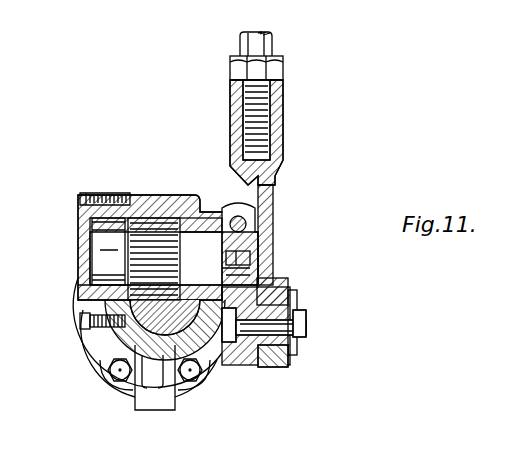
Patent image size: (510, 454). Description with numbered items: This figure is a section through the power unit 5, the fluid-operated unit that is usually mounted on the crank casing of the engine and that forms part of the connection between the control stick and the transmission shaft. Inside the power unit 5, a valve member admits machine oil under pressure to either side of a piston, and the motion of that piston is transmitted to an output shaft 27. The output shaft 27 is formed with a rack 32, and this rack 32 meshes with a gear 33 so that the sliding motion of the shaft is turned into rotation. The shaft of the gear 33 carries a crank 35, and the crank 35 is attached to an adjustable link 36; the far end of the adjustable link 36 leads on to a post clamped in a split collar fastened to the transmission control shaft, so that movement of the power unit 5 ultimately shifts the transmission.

The power unit 5 is at (214, 373).
The output shaft 27 is at (105, 358).
The rack 32 is at (100, 331).
The gear 33 is at (165, 230).
The crank 35 is at (270, 290).
The adjustable link 36 is at (273, 44).